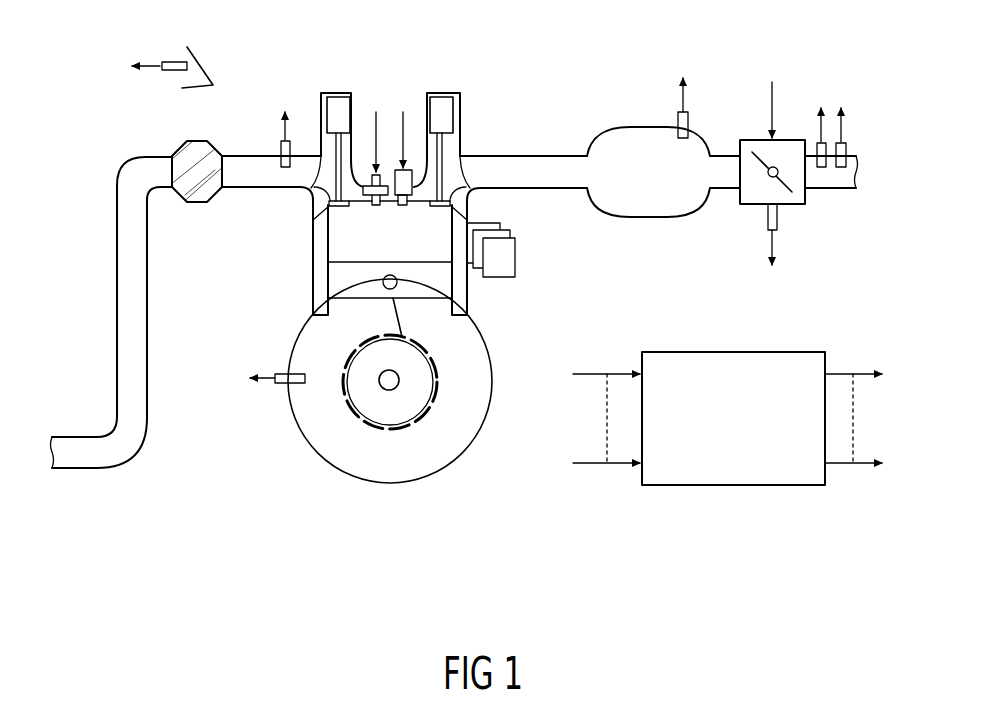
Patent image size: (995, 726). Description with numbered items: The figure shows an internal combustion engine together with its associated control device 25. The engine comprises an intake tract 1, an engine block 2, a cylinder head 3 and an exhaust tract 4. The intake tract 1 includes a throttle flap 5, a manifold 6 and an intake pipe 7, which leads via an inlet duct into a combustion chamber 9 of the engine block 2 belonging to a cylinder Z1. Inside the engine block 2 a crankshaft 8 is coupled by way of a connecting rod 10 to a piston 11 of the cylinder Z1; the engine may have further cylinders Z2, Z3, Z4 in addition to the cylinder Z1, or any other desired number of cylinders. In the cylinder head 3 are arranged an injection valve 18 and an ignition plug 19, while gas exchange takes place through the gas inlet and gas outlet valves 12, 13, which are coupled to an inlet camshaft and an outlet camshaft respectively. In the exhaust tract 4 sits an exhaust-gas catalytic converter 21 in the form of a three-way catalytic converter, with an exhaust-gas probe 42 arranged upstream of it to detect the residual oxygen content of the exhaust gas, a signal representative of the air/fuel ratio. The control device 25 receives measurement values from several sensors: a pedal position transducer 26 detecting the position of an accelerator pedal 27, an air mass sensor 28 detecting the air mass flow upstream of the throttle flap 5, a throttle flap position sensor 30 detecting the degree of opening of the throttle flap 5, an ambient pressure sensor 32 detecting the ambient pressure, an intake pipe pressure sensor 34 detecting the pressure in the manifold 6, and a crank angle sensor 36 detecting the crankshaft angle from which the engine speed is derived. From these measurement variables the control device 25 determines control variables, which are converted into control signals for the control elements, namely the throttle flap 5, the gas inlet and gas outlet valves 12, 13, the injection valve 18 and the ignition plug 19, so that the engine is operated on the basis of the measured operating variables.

The intake tract 1 is at (670, 232).
The engine block 2 is at (237, 260).
The cylinder head 3 is at (388, 103).
The exhaust tract 4 is at (100, 207).
The throttle flap 5 is at (743, 138).
The manifold 6 is at (693, 203).
The intake pipe 7 is at (567, 150).
The crankshaft 8 is at (393, 380).
The combustion chamber 9 is at (337, 262).
The connecting rod 10 is at (397, 318).
The piston 11 is at (426, 293).
The gas inlet valve 12 is at (444, 208).
The gas outlet valve 13 is at (340, 212).
The injection valve 18 is at (403, 208).
The ignition plug 19 is at (373, 210).
The exhaust-gas catalytic converter 21 is at (198, 203).
The control device 25 is at (732, 352).
The pedal position transducer 26 is at (173, 73).
The accelerator pedal 27 is at (198, 62).
The air mass sensor 28 is at (817, 142).
The throttle flap position sensor 30 is at (778, 215).
The ambient pressure sensor 32 is at (845, 142).
The intake pipe pressure sensor 34 is at (689, 118).
The crank angle sensor 36 is at (283, 386).
The exhaust-gas probe 42 is at (281, 148).
The cylinder Z1 is at (462, 283).
The cylinder Z2 is at (505, 258).
The cylinder Z3 is at (512, 237).
The cylinder Z4 is at (500, 223).